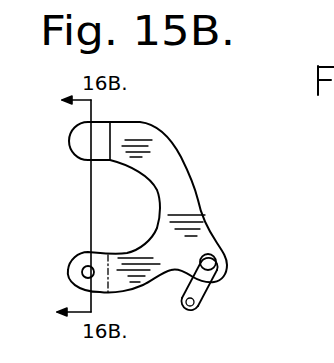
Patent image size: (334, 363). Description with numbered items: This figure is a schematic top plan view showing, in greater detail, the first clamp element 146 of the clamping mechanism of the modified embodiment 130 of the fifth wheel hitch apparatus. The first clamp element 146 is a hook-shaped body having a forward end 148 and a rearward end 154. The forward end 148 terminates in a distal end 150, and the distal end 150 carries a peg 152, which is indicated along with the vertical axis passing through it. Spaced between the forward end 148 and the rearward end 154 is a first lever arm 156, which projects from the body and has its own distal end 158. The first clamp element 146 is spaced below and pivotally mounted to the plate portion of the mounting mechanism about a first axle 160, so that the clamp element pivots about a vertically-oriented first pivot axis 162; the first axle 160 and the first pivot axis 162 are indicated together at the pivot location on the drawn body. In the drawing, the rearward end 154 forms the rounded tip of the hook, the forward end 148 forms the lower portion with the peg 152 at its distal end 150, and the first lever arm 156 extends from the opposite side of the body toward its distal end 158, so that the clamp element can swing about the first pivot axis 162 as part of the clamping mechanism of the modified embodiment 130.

The modified embodiment 130 is at (193, 126).
The rearward end 154 is at (132, 121).
The first clamp element 146 is at (192, 163).
The first lever arm 156 is at (217, 243).
The distal end 150 is at (80, 254).
The peg 152 is at (64, 278).
The forward end 148 is at (143, 287).
The distal end 158 is at (190, 311).
The first axle 160 is at (212, 265).
The first pivot axis 162 is at (191, 280).